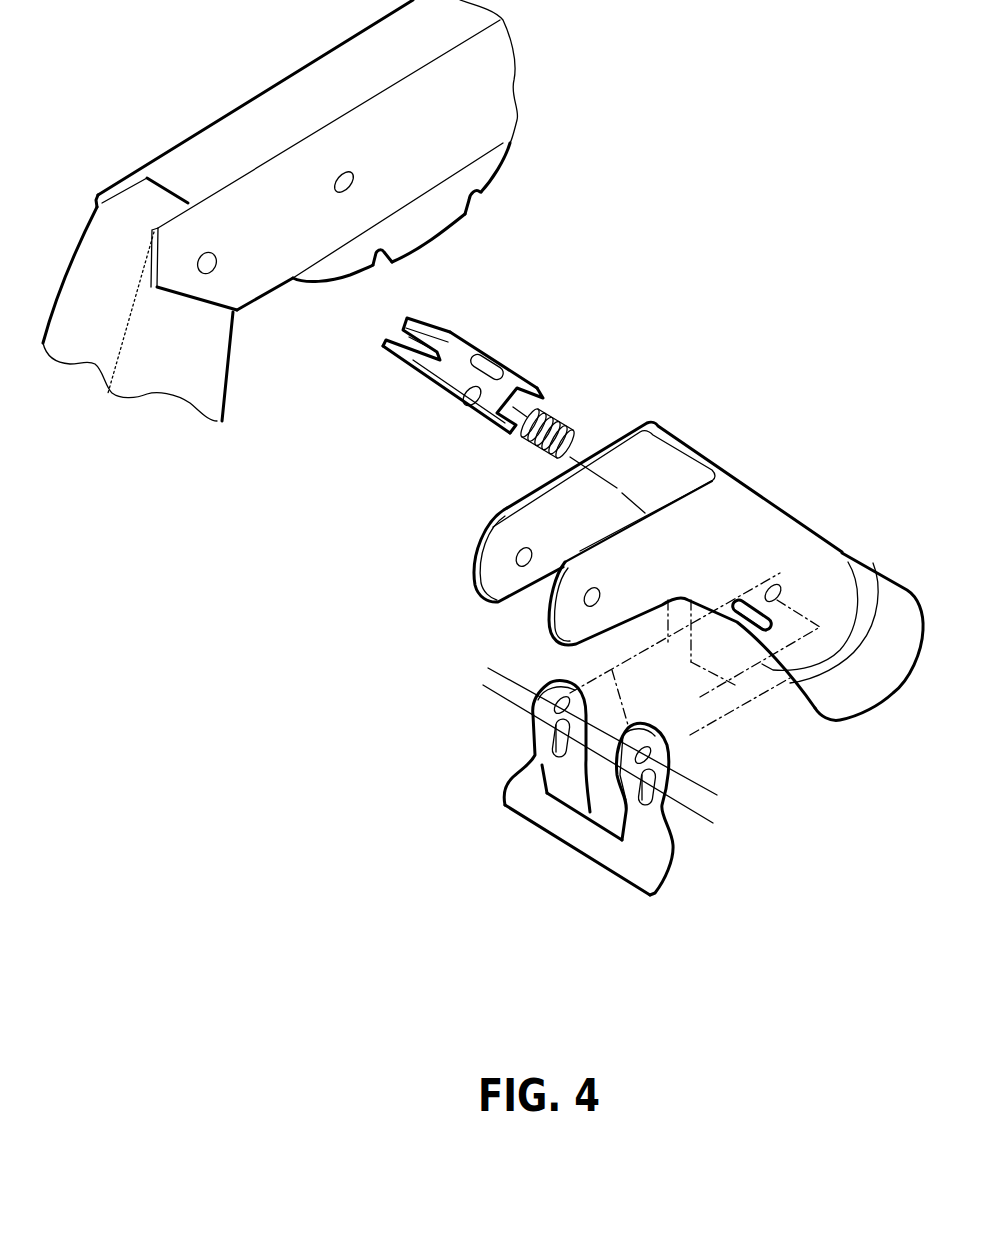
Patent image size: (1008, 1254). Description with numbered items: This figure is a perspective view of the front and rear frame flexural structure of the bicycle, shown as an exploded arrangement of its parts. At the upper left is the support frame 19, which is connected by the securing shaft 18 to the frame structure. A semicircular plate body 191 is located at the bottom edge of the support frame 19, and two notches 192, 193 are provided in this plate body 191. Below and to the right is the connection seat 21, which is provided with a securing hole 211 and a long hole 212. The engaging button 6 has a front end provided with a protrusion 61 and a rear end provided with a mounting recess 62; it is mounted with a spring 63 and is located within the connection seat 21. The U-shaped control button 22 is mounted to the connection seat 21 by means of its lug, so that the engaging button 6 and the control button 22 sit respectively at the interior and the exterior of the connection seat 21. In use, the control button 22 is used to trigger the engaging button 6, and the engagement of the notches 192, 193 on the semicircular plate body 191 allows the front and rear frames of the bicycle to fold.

The securing shaft 18 is at (208, 380).
The support frame 19 is at (482, 90).
The semicircular plate body 191 is at (453, 223).
The notch 192 is at (378, 263).
The notch 193 is at (477, 193).
The engaging button 6 is at (513, 367).
The protrusion 61 is at (406, 317).
The mounting recess 62 is at (510, 437).
The spring 63 is at (563, 423).
The connection seat 21 is at (750, 485).
The securing hole 211 is at (774, 584).
The long hole 212 is at (745, 625).
The control button 22 is at (568, 852).